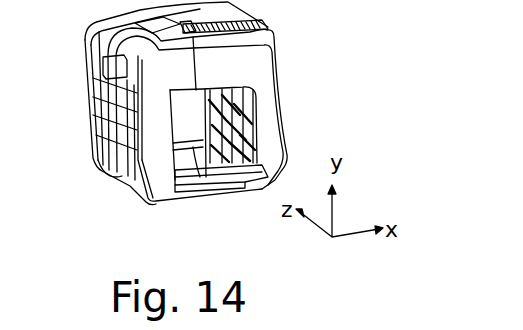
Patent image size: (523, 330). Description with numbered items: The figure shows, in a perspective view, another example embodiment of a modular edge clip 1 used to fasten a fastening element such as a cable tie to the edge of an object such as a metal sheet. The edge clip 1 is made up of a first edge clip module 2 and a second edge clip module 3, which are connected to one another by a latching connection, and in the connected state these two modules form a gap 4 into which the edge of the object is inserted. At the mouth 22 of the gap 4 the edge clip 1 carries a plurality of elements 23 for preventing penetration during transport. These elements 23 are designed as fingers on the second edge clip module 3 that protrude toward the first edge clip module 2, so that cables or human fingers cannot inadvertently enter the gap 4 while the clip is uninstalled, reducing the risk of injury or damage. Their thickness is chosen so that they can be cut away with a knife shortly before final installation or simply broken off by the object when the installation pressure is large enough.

The edge clip 1 is at (341, 91).
The first edge clip module 2 is at (266, 38).
The second edge clip module 3 is at (107, 22).
The gap 4 is at (192, 136).
The mouth 22 is at (178, 216).
The elements for preventing penetration during transport 23 is at (233, 188).